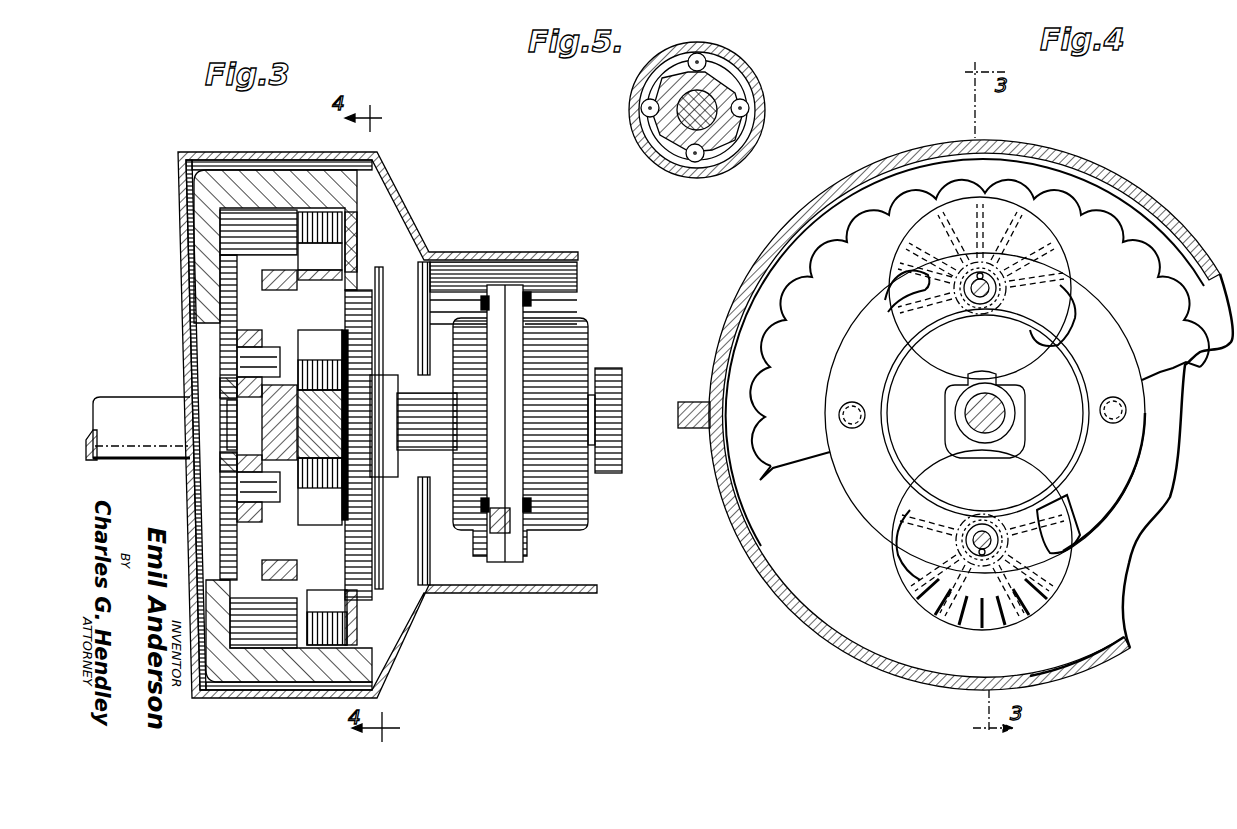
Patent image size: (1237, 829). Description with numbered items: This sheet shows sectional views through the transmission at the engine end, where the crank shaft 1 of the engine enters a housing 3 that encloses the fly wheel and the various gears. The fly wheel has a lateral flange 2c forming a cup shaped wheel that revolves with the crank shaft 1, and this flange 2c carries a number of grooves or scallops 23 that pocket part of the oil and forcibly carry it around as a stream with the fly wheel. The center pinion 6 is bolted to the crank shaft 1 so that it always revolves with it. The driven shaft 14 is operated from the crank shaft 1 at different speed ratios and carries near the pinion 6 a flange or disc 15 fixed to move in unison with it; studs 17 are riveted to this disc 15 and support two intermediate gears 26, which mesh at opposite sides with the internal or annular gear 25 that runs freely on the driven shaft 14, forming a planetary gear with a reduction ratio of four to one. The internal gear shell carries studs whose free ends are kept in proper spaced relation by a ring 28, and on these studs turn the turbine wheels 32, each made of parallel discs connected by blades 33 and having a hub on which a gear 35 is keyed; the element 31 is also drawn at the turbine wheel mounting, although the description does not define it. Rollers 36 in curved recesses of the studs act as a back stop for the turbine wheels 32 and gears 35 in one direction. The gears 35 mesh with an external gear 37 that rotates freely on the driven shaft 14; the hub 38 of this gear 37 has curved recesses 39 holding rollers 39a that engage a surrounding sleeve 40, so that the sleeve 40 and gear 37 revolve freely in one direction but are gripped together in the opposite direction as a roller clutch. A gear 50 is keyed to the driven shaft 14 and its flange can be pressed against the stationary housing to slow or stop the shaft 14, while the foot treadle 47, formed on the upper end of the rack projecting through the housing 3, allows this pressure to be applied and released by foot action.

In FIG. 3, the crank shaft 1 is at (138, 428).
In FIG. 4, the lateral flange 2c is at (979, 330).
In FIG. 3, the housing 3 is at (386, 164).
In FIG. 4, the housing 3 is at (1132, 198).
In FIG. 3, the center pinion 6 is at (232, 430).
In FIG. 3, the driven shaft 14 is at (436, 423).
In FIG. 5, the driven shaft 14 is at (690, 143).
In FIG. 4, the driven shaft 14 is at (1000, 418).
In FIG. 3, the flange or disc 15 is at (292, 420).
In FIG. 3, the studs 17 is at (255, 355).
In FIG. 4, the grooves or scallops 23 is at (1172, 278).
In FIG. 3, the internal or annular gear 25 is at (190, 322).
In FIG. 3, the intermediate gears 26 is at (225, 395).
In FIG. 3, the ring 28 is at (378, 318).
In FIG. 4, the pinion shaft 31 is at (990, 290).
In FIG. 3, the turbine wheels 32 is at (352, 245).
In FIG. 4, the turbine wheels 32 is at (978, 420).
In FIG. 3, the blades 33 is at (316, 230).
In FIG. 4, the blades 33 is at (918, 250).
In FIG. 3, the gear 35 is at (372, 262).
In FIG. 4, the gear 35 is at (1010, 313).
In FIG. 4, the rollers 36 is at (984, 274).
In FIG. 3, the external gear 37 is at (362, 490).
In FIG. 5, the hub 38 is at (732, 90).
In FIG. 5, the curved recesses 39 is at (740, 118).
In FIG. 4, the curved recesses 39 is at (1020, 410).
In FIG. 5, the rollers 39a is at (690, 52).
In FIG. 5, the sleeve 40 is at (752, 70).
In FIG. 3, the foot treadle 47 is at (500, 535).
In FIG. 3, the gear 50 is at (612, 372).